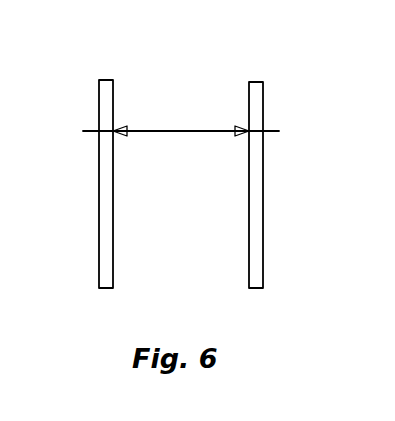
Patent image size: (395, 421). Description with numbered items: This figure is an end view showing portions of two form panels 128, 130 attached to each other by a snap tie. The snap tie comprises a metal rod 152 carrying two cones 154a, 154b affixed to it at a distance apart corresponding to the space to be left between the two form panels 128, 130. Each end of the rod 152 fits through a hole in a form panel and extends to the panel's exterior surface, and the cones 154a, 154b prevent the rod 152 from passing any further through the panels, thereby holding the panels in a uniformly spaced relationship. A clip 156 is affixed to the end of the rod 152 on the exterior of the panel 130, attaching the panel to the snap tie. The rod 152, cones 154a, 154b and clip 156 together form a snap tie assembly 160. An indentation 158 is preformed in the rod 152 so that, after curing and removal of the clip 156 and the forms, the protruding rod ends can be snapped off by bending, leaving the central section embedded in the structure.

The form panel 128 is at (103, 193).
The form panel 130 is at (262, 200).
The metal rod 152 is at (152, 128).
The cone 154a is at (245, 129).
The cone 154b is at (118, 137).
The clip 156 is at (265, 130).
The indentation 158 is at (237, 135).
The snap tie assembly 160 is at (182, 110).